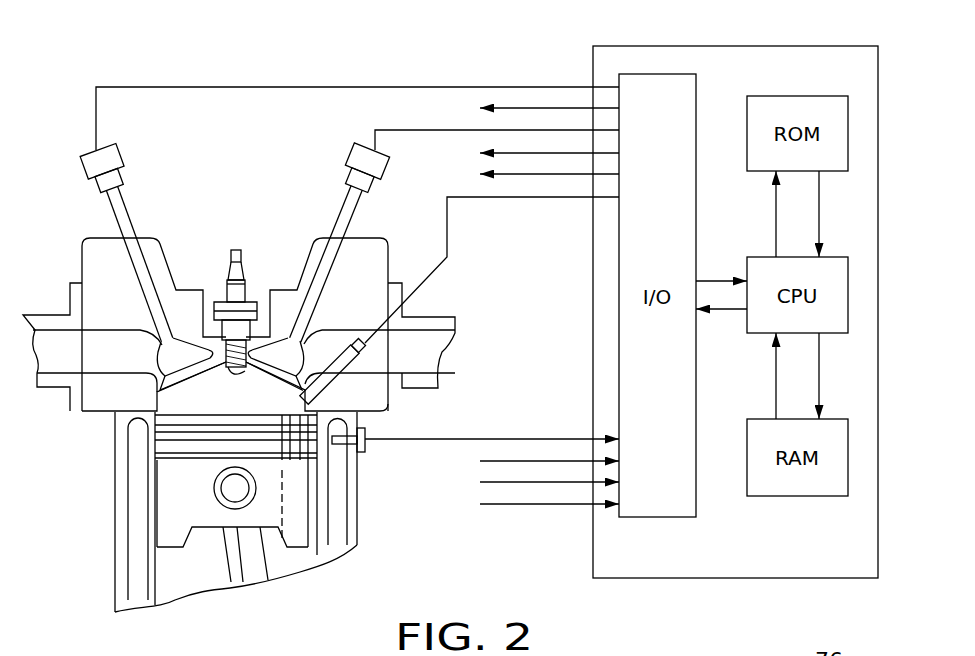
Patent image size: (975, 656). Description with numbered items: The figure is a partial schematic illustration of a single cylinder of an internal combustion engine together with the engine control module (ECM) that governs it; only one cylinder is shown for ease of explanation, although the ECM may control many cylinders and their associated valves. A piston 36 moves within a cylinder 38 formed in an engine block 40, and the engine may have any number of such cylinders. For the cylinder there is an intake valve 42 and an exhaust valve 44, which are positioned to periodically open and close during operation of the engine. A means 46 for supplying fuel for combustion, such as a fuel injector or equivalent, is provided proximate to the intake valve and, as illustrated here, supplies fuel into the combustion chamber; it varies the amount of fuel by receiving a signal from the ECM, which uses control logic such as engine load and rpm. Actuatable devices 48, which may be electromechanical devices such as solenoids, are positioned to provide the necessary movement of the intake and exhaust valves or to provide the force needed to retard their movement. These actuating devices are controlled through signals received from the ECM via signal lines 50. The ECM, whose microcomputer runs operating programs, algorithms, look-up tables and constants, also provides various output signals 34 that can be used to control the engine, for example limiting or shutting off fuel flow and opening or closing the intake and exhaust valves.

The output signals 34 is at (528, 108).
The piston 36 is at (203, 515).
The cylinder 38 is at (318, 528).
The engine block 40 is at (115, 495).
The intake valve 42 is at (312, 388).
The exhaust valve 44 is at (170, 360).
The means for supplying fuel 46 is at (340, 372).
The actuatable devices 48 is at (108, 158).
The signal lines 50 is at (456, 128).